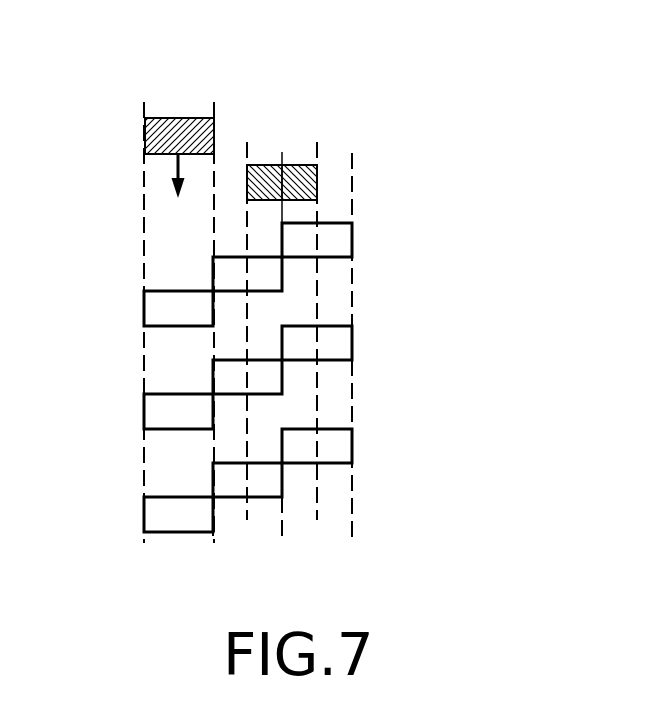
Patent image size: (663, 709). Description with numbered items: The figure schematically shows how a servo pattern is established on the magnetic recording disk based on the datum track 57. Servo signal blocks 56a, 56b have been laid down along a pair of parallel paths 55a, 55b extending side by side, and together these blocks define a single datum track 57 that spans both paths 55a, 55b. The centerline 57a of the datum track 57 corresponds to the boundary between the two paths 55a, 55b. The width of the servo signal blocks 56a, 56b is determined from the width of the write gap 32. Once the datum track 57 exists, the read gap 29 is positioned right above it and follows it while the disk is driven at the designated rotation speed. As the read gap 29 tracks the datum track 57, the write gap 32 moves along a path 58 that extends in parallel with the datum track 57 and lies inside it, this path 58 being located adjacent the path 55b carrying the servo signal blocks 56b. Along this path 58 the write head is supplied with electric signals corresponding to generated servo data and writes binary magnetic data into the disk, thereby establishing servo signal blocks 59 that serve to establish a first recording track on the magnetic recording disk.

The path 58 is at (214, 92).
The datum track 57 is at (317, 133).
The write gap 32 is at (146, 135).
The read gap 29 is at (310, 181).
The servo signal block 56a is at (343, 238).
The servo signal block 56b is at (210, 266).
The servo signal block 59 is at (150, 307).
The centerline 57a is at (282, 518).
The path 55b is at (282, 552).
The path 55a is at (352, 552).